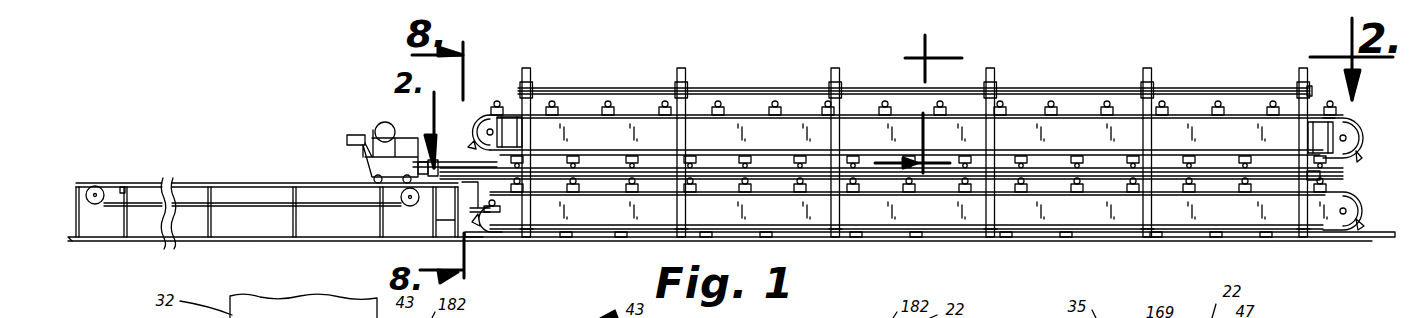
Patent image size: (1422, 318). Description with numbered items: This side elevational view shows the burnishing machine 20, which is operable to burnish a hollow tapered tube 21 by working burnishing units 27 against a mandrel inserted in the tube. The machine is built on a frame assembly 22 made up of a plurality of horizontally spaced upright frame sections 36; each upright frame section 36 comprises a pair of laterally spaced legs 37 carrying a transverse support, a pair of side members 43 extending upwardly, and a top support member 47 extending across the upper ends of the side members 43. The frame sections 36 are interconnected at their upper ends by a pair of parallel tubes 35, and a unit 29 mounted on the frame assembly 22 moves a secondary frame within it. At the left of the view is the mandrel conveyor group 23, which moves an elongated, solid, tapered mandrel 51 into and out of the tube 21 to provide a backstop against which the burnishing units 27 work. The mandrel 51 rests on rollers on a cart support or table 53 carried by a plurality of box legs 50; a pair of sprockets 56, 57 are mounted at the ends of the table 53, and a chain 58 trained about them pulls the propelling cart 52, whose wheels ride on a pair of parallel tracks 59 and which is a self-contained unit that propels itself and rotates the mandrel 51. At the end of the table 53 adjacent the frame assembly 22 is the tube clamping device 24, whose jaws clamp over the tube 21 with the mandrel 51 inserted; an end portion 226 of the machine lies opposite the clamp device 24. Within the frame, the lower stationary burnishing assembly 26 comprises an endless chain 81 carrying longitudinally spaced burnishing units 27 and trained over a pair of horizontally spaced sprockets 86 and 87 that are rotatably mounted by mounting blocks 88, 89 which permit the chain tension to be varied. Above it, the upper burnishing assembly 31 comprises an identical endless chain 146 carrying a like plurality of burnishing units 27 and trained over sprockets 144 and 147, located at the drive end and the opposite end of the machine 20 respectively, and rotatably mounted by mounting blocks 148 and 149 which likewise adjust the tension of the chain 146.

The burnishing machine 20 is at (1194, 62).
The hollow tapered tube 21 is at (1330, 176).
The frame assembly 22 is at (1012, 78).
The mandrel conveyor group 23 is at (267, 196).
The tube clamping device 24 is at (430, 214).
The lower stationary burnishing assembly 26 is at (1222, 243).
The burnishing units 27 is at (1058, 102).
The unit 29 is at (676, 72).
The upper burnishing assembly 31 is at (1352, 108).
The parallel tubes 35 is at (575, 88).
The upright frame sections 36 is at (688, 115).
The legs 37 is at (688, 233).
The side members 43 is at (1145, 208).
The top support member 47 is at (533, 86).
The box legs 50 is at (290, 226).
The mandrel 51 is at (423, 162).
The propelling cart 52 is at (365, 170).
The cart support table 53 is at (190, 217).
The sprocket 56 is at (95, 186).
The sprocket 57 is at (408, 206).
The chain 58 is at (353, 207).
The parallel tracks 59 is at (245, 183).
The endless chain 81 is at (515, 237).
The sprocket 86 is at (488, 230).
The sprocket 87 is at (1345, 224).
The mounting block 88 is at (510, 212).
The mounting block 89 is at (1324, 218).
The sprocket 144 is at (483, 117).
The endless chain 146 is at (1190, 115).
The sprocket 147 is at (1352, 130).
The mounting block 148 is at (515, 117).
The mounting block 149 is at (1320, 128).
The end portion 226 is at (440, 172).